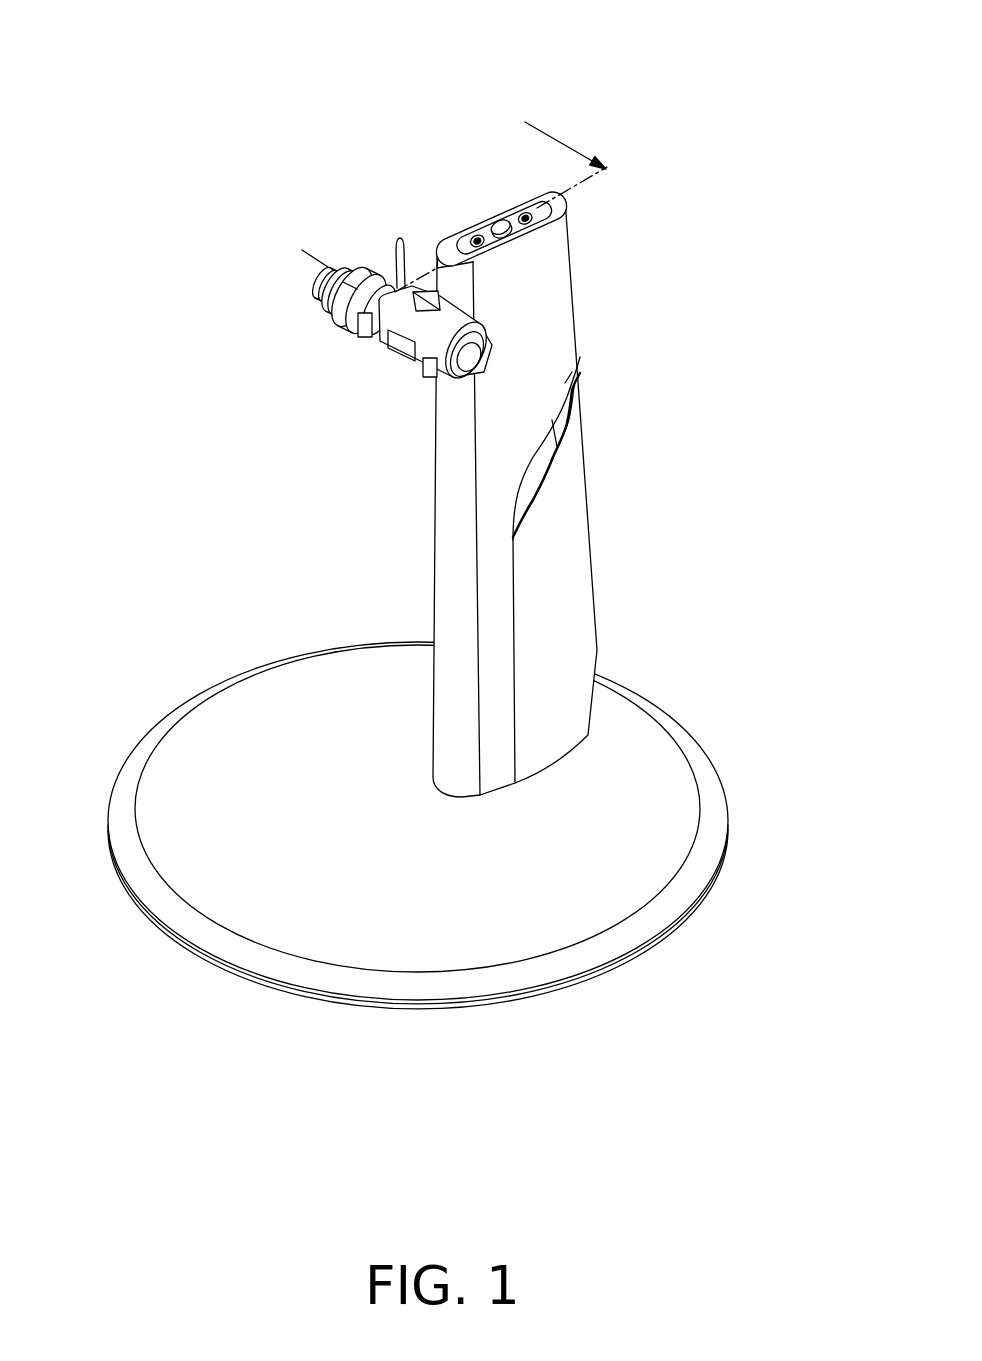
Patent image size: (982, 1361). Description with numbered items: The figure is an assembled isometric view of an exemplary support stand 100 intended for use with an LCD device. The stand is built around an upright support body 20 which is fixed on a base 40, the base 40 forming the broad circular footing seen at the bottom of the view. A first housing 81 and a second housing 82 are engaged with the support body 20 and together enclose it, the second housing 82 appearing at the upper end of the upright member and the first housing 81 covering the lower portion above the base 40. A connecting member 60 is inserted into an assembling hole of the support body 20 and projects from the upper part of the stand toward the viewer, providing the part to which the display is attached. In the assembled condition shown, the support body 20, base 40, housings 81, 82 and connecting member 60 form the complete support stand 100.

The support stand 100 is at (464, 512).
The support body 20 is at (537, 467).
The base 40 is at (710, 838).
The connecting member 60 is at (382, 337).
The first housing 81 is at (560, 598).
The second housing 82 is at (555, 280).